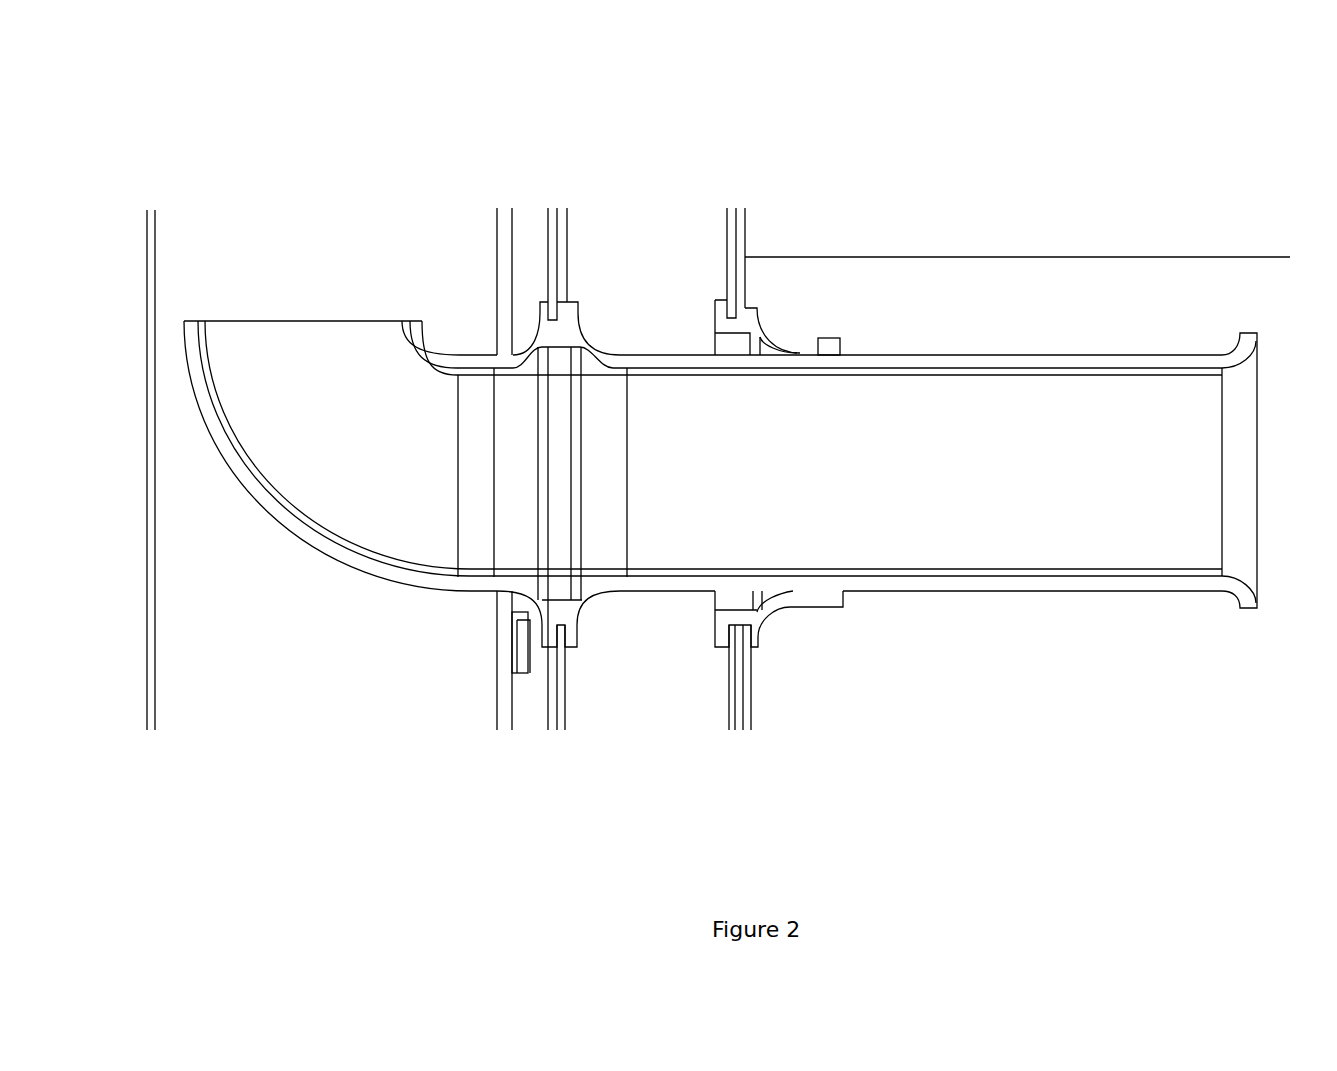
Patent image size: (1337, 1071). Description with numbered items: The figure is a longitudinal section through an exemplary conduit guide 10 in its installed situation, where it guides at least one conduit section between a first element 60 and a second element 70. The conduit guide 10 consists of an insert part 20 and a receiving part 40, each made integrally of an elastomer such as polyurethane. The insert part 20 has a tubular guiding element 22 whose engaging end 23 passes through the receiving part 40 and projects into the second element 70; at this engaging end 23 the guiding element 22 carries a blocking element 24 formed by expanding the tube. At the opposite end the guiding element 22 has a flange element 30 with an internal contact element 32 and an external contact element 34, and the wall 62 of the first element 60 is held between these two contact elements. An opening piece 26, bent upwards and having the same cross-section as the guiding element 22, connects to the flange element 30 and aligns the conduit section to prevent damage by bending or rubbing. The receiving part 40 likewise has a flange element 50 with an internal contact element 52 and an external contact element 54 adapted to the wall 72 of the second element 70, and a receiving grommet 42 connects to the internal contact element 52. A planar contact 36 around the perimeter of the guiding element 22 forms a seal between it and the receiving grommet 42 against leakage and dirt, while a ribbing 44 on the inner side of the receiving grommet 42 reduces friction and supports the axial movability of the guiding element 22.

The conduit guide 10 is at (725, 107).
The insert part 20 is at (657, 632).
The guiding element 22 is at (985, 577).
The engaging end 23 is at (1200, 612).
The blocking element 24 is at (1240, 350).
The opening piece 26 is at (325, 550).
The flange element 30 is at (562, 338).
The internal contact element 32 is at (548, 310).
The external contact element 34 is at (573, 300).
The planar contact 36 is at (838, 353).
The receiving part 40 is at (774, 277).
The receiving grommet 42 is at (770, 612).
The ribbing 44 is at (822, 348).
The flange element 50 is at (740, 330).
The internal contact element 52 is at (752, 300).
The external contact element 54 is at (715, 300).
The first element 60 is at (520, 230).
The wall 62 is at (558, 658).
The second element 70 is at (995, 298).
The wall 72 is at (732, 735).